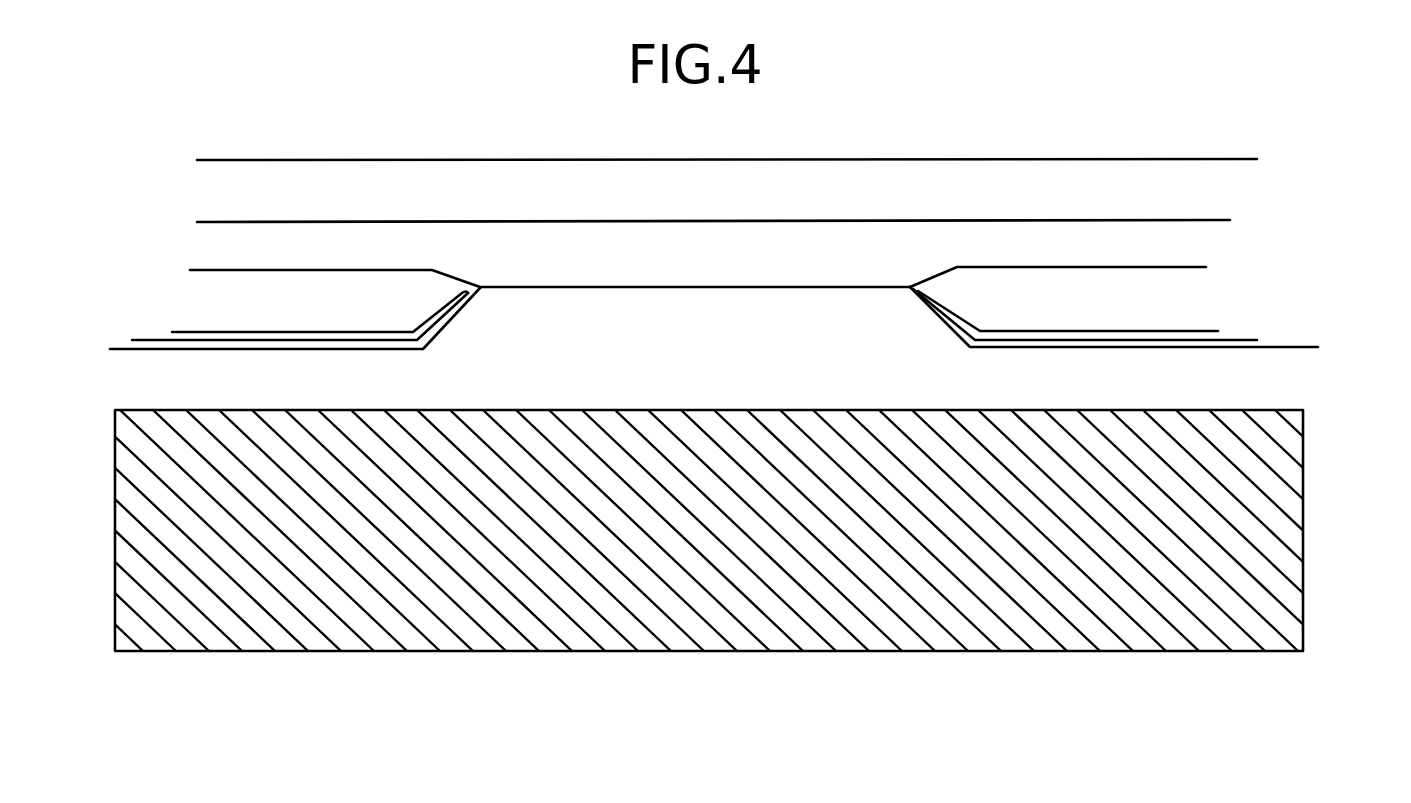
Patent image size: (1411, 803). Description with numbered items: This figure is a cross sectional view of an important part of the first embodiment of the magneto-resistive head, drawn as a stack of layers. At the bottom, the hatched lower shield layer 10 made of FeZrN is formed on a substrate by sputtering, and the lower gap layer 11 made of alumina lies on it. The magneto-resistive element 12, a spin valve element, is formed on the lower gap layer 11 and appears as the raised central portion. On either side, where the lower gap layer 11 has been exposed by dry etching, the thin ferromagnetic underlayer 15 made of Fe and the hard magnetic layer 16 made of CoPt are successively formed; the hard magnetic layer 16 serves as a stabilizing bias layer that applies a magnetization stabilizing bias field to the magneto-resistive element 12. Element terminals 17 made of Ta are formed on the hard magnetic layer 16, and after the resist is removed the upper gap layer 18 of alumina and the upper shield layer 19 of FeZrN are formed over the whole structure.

The lower shield layer 10 is at (1280, 483).
The lower gap layer 11 is at (1302, 380).
The magneto-resistive element 12 is at (902, 320).
The ferromagnetic underlayer 15 is at (1237, 343).
The hard magnetic layer 16 is at (1037, 333).
The element terminals 17 is at (1170, 294).
The upper gap layer 18 is at (1200, 246).
The upper shield layer 19 is at (1233, 187).